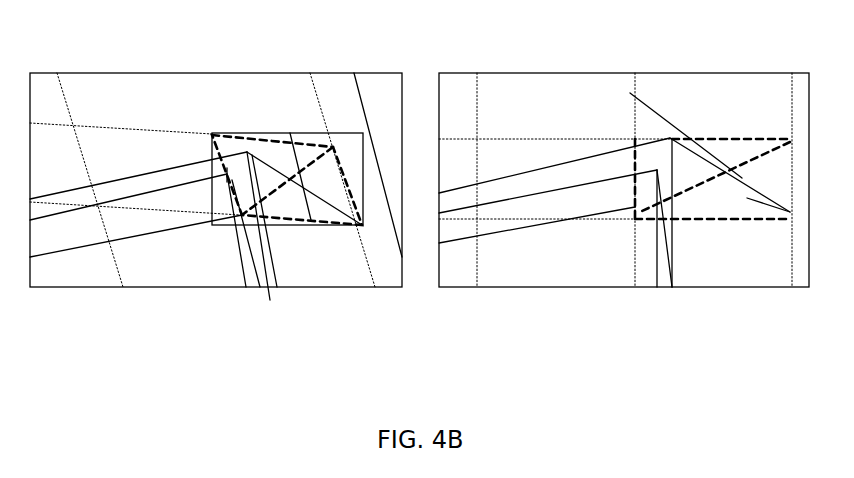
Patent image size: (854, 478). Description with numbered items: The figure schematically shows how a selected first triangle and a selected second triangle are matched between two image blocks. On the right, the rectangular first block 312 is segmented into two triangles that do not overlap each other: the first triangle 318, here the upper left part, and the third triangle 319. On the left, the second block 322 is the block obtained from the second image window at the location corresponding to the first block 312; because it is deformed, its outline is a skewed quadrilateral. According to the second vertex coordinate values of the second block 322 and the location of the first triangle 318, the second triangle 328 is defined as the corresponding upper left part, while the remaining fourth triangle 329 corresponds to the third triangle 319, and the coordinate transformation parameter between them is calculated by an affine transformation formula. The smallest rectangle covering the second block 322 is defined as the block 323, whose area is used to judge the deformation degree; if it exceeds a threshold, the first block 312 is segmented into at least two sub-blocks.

The first block 312 is at (630, 93).
The first triangle 318 is at (672, 140).
The third triangle 319 is at (747, 198).
The second block 322 is at (290, 133).
The block 323 is at (300, 140).
The second triangle 328 is at (255, 215).
The fourth triangle 329 is at (303, 202).